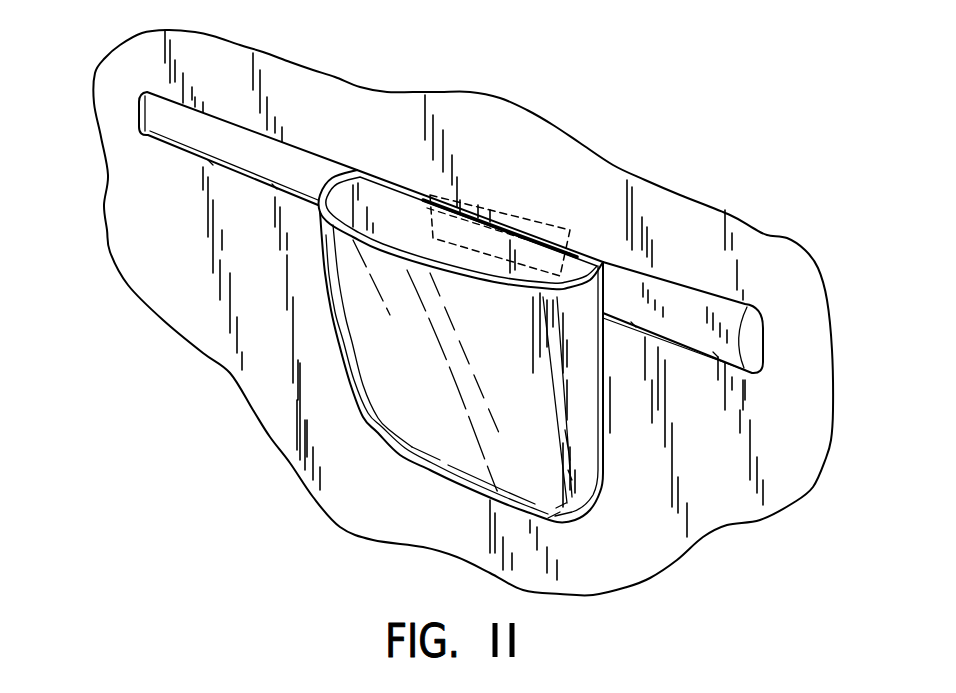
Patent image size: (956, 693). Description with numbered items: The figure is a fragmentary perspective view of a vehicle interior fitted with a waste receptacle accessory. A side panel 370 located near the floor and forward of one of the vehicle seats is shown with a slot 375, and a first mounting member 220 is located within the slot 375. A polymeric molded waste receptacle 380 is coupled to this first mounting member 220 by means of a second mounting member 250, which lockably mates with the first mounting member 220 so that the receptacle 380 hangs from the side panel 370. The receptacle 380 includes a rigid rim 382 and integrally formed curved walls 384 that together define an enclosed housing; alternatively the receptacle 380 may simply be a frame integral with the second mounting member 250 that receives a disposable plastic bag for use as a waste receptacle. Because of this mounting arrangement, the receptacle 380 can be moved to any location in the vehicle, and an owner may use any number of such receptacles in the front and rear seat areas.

The side panel 370 is at (732, 222).
The slot 375 is at (743, 367).
The waste receptacle 380 is at (444, 481).
The rigid rim 382 is at (355, 222).
The curved walls 384 is at (405, 436).
The second mounting member 250 is at (495, 207).
The first mounting member 220 is at (580, 248).